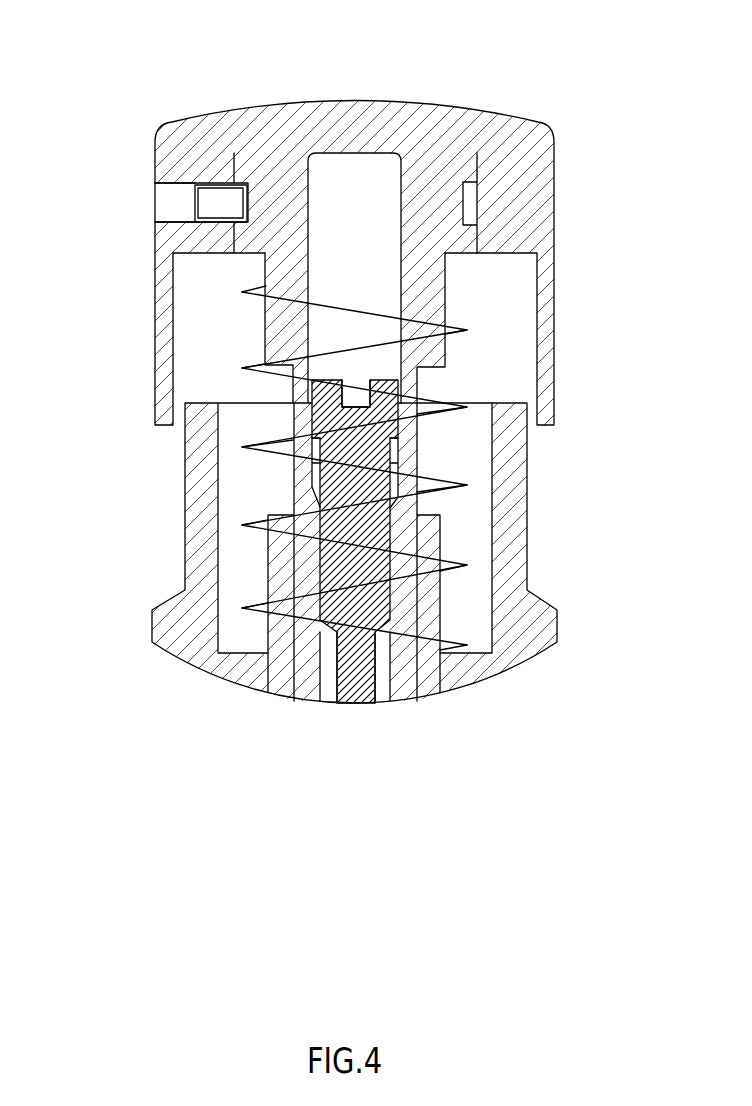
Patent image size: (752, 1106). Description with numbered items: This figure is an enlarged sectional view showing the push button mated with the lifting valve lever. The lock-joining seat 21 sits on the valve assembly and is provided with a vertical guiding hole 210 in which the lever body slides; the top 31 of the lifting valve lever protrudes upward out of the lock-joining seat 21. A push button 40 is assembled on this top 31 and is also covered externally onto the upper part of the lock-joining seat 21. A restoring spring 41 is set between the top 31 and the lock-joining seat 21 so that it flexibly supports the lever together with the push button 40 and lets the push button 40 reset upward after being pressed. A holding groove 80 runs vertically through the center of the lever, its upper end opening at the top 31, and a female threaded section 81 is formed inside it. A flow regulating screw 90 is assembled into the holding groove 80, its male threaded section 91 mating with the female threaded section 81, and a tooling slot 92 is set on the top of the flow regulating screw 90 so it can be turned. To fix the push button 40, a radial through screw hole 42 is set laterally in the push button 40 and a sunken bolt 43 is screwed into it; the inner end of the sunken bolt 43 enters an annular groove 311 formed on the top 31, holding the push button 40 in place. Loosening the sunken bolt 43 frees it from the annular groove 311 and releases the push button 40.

The lock-joining seat 21 is at (203, 479).
The top 31 is at (272, 176).
The annular groove 311 is at (246, 204).
The push button 40 is at (556, 157).
The restoring spring 41 is at (467, 330).
The radial through screw hole 42 is at (197, 184).
The sunken bolt 43 is at (203, 205).
The holding groove 80 is at (318, 683).
The female threaded section 81 is at (420, 492).
The male threaded section 91 is at (355, 552).
The flow regulating screw 90 is at (372, 594).
The tooling slot 92 is at (357, 407).
The vertical guiding hole 210 is at (418, 658).